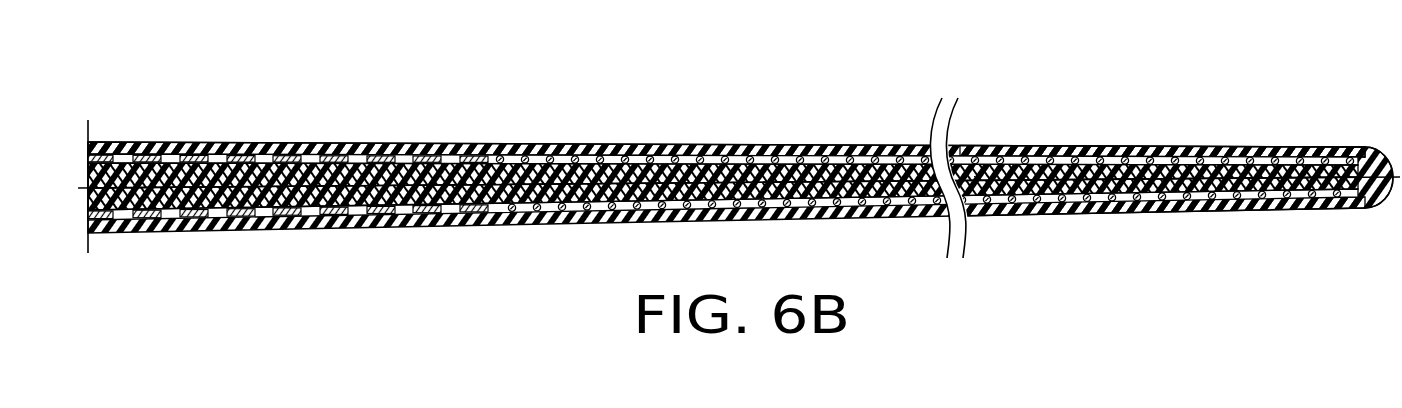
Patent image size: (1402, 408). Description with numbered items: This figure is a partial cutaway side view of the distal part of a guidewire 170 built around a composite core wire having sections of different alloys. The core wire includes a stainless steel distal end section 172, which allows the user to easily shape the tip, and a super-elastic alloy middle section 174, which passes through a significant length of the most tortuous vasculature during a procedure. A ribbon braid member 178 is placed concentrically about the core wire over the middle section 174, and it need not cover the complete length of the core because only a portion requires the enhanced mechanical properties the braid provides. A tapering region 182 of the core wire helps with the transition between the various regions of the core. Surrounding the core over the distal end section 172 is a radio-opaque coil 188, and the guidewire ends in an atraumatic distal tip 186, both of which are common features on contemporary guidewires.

The catheter distal section 170 is at (1180, 61).
The distal end section 172 is at (863, 178).
The middle section 174 is at (263, 187).
The ribbon braid member 178 is at (157, 147).
The tapering region 182 is at (460, 126).
The atraumatic distal tip 186 is at (1378, 203).
The radio-opaque coil 188 is at (1242, 148).